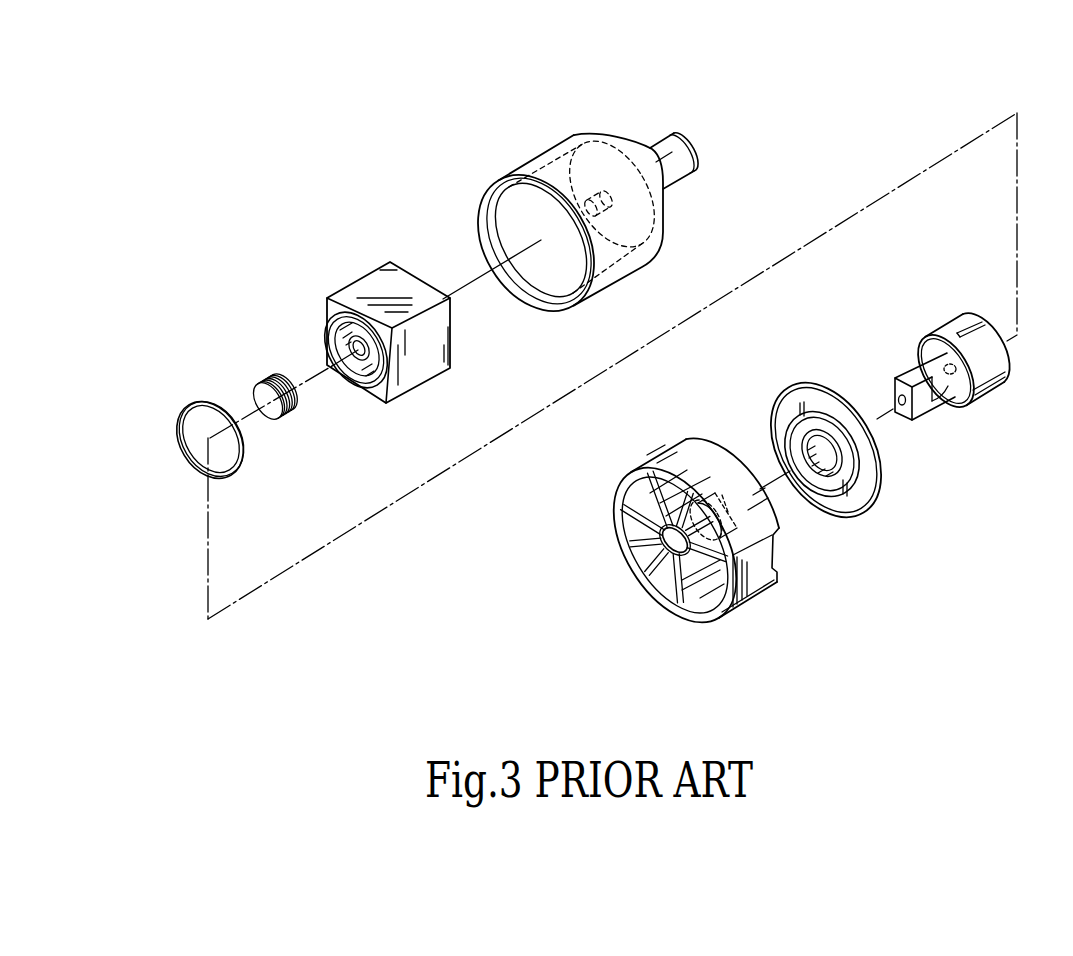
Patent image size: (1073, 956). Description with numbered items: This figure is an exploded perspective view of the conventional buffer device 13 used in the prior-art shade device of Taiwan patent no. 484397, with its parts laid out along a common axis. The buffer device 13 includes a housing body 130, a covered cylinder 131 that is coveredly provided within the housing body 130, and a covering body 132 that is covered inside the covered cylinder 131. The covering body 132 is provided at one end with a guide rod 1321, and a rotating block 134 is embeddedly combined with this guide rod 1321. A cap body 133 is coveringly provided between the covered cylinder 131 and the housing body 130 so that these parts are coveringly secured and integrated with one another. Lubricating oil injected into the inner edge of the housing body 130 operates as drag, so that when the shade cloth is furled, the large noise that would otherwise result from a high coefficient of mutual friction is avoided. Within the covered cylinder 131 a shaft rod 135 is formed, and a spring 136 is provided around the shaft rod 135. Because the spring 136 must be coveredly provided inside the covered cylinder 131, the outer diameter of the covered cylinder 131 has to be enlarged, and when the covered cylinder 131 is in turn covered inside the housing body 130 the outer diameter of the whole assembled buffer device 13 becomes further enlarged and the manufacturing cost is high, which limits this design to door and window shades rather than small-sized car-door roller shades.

The buffer device 13 is at (451, 166).
The housing body 130 is at (543, 127).
The covered cylinder 131 is at (343, 302).
The covering body 132 is at (946, 391).
The guide rod 1321 is at (908, 377).
The cap body 133 is at (866, 523).
The rotating block 134 is at (757, 616).
The shaft rod 135 is at (350, 348).
The spring 136 is at (272, 379).